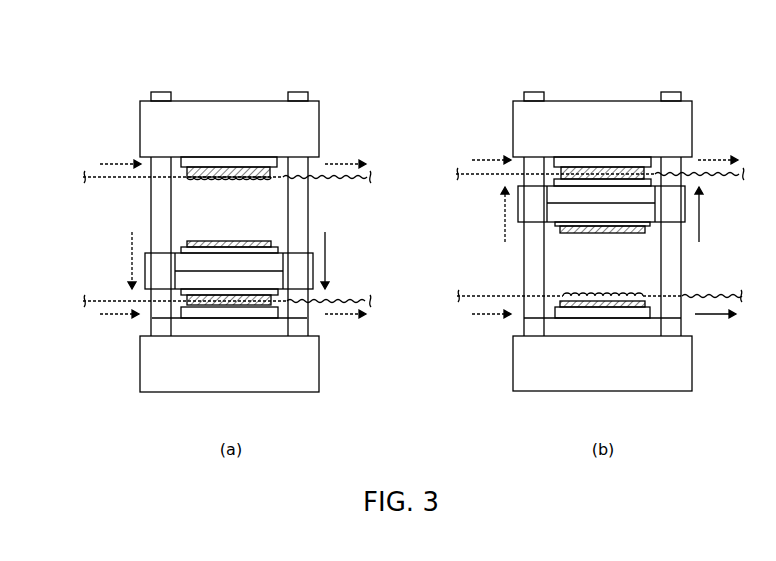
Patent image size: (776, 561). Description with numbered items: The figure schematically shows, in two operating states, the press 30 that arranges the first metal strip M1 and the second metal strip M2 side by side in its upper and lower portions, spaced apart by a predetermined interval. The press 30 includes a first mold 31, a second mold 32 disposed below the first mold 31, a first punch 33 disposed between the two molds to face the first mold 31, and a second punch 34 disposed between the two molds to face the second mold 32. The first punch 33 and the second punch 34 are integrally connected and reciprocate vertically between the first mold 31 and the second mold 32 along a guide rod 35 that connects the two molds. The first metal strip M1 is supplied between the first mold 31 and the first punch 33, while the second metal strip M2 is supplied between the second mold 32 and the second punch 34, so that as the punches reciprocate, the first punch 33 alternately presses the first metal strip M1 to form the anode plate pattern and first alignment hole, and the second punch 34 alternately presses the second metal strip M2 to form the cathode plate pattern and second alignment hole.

The press 30 is at (233, 86).
The first mold 31 is at (191, 156).
The second mold 32 is at (183, 331).
The first punch 33 is at (193, 239).
The second punch 34 is at (194, 287).
The guide rod 35 is at (298, 206).
The first metal strip M1 is at (112, 183).
The second metal strip M2 is at (111, 294).